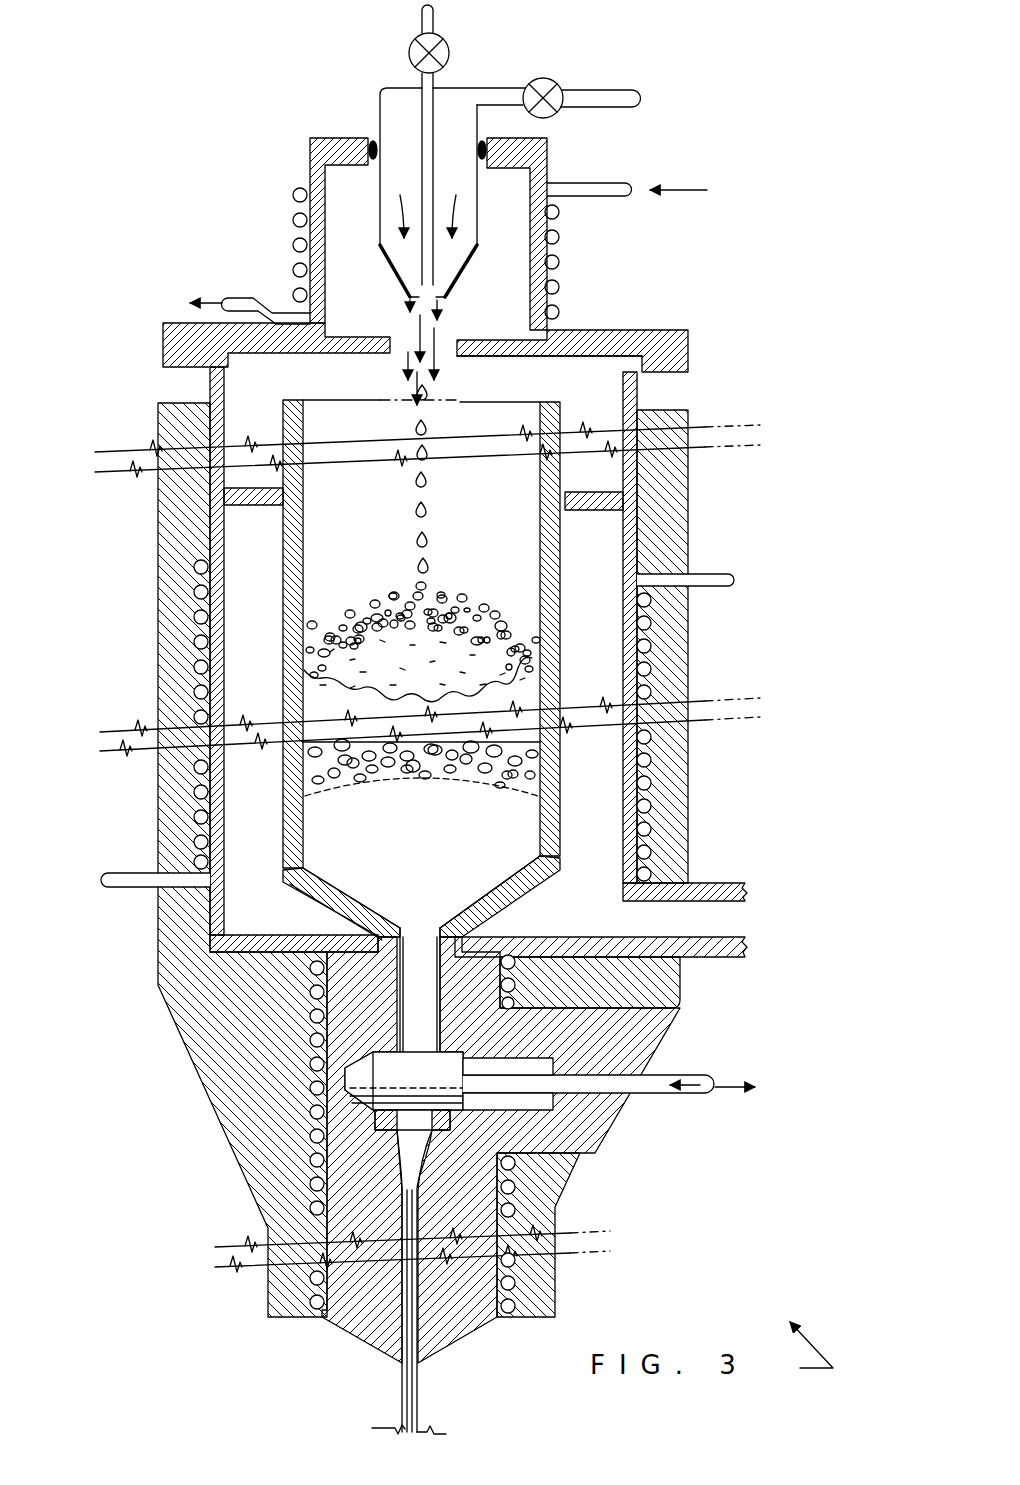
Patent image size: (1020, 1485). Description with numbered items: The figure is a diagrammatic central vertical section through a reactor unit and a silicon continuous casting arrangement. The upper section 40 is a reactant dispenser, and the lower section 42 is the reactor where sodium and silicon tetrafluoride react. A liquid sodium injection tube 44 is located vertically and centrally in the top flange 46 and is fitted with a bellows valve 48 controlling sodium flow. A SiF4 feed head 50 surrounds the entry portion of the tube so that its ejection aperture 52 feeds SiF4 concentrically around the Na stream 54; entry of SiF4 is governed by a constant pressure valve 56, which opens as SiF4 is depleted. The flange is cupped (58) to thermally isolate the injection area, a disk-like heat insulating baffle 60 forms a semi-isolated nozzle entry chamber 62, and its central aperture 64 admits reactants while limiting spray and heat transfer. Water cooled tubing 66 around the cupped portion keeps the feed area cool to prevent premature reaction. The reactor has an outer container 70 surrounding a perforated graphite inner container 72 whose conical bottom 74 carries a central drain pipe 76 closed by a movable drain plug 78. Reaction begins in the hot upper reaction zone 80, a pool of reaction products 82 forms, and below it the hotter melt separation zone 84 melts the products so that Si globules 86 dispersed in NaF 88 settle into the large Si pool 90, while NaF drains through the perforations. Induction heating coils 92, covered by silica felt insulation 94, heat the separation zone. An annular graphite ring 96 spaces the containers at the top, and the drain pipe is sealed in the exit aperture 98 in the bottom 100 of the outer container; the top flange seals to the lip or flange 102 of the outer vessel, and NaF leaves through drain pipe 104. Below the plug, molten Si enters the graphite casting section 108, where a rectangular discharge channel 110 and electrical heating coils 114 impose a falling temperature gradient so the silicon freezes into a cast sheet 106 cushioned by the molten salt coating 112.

The upper section 40 is at (205, 219).
The lower section 42 is at (72, 674).
The liquid sodium injection tube 44 is at (440, 82).
The top flange 46 is at (549, 163).
The bellows valve 48 is at (446, 42).
The SiF4 feed head 50 is at (478, 226).
The ejection aperture 52 is at (442, 302).
The Na stream 54 is at (412, 316).
The constant pressure valve 56 is at (549, 78).
The cupped portion 58 is at (326, 244).
The heat insulating baffle 60 is at (517, 357).
The nozzle entry chamber 62 is at (405, 345).
The aperture 64 is at (443, 352).
The water cooled tubing 66 is at (560, 239).
The outer container 70 is at (636, 395).
The inner container 72 is at (292, 538).
The bottom 74 is at (606, 937).
The drain pipe 76 is at (436, 942).
The drain plug 78 is at (440, 1113).
The reaction zone 80 is at (518, 553).
The pool of reaction products 82 is at (497, 635).
The melt separation zone 84 is at (493, 772).
The Si globules 86 is at (330, 758).
The NaF 88 is at (506, 706).
The Si ingot or pool 90 is at (440, 835).
The heating coils 92 is at (648, 626).
The silica felt insulation 94 is at (157, 942).
The annular graphite ring 96 is at (590, 500).
The exit aperture 98 is at (362, 932).
The bottom of outer container 100 is at (250, 935).
The lip or flange 102 is at (690, 362).
The NaF drain pipe 104 is at (712, 886).
The Si cast sheet 106 is at (412, 1400).
The casting section 108 is at (338, 1118).
The Si discharge channel 110 is at (402, 1307).
The salt coating 112 is at (404, 1378).
The electrical heating coils 114 is at (317, 1032).